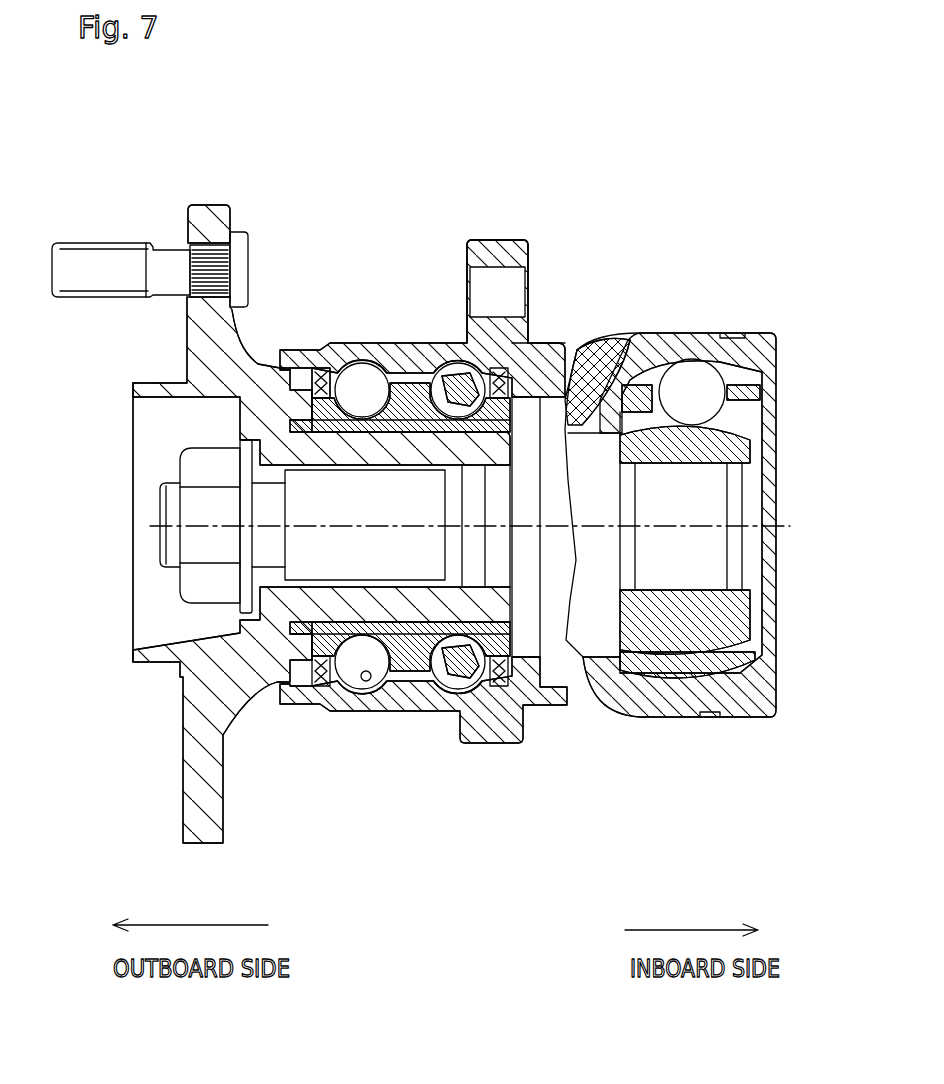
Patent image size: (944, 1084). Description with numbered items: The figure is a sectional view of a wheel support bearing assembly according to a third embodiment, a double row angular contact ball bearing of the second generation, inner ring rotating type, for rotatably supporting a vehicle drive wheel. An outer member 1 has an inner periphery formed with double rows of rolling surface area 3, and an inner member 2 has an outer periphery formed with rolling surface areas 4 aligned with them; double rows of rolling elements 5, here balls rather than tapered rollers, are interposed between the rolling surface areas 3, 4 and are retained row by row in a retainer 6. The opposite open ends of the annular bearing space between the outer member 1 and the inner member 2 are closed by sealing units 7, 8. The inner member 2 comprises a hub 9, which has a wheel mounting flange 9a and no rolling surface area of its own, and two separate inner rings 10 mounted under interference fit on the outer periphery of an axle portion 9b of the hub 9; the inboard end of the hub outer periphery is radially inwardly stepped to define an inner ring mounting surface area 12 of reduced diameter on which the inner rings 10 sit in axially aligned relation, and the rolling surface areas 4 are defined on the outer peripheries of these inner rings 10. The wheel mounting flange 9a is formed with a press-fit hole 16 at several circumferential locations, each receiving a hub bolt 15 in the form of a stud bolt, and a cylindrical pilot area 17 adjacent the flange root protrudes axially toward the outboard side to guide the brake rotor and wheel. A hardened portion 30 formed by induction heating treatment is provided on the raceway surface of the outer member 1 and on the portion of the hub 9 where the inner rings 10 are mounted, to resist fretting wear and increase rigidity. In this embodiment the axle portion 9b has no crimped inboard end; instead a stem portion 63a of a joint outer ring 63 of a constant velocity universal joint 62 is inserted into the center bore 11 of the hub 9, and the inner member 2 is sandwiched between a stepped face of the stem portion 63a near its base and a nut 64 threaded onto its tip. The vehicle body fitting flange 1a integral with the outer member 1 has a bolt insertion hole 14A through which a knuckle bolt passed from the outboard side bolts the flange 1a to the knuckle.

The outer member 1 is at (410, 745).
The vehicle body fitting flange 1a is at (502, 248).
The inner member 2 is at (50, 424).
The rolling surface area 3 is at (364, 675).
The rolling surface area 4 is at (265, 650).
The rolling elements 5 is at (322, 688).
The roller retainer 6 is at (412, 642).
The sealing unit 7 is at (318, 368).
The sealing unit 8 is at (545, 344).
The hub 9 is at (260, 426).
The wheel mounting flange 9a is at (203, 207).
The axle portion 9b is at (408, 443).
The inner rings 10 is at (300, 470).
The center bore 11 is at (250, 585).
The inner ring mounting surface area 12 is at (520, 417).
The bolt insertion hole 14A is at (473, 273).
The hub bolt 15 is at (98, 243).
The press-fit hole 16 is at (188, 253).
The cylindrical pilot area 17 is at (130, 386).
The hardened portion 30 is at (442, 348).
The constant velocity universal joint 62 is at (746, 313).
The joint outer ring 63 is at (676, 718).
The stem portion 63a is at (160, 513).
The nut 64 is at (200, 537).